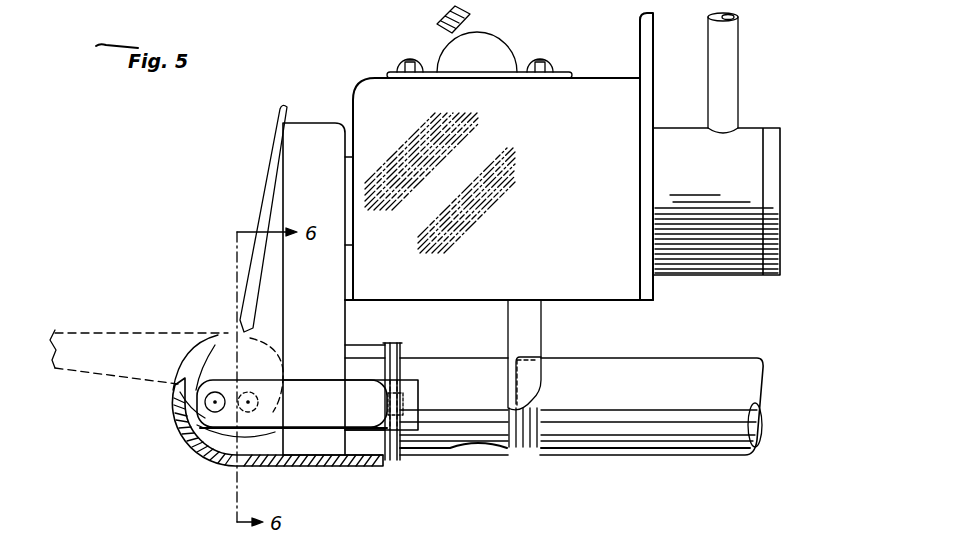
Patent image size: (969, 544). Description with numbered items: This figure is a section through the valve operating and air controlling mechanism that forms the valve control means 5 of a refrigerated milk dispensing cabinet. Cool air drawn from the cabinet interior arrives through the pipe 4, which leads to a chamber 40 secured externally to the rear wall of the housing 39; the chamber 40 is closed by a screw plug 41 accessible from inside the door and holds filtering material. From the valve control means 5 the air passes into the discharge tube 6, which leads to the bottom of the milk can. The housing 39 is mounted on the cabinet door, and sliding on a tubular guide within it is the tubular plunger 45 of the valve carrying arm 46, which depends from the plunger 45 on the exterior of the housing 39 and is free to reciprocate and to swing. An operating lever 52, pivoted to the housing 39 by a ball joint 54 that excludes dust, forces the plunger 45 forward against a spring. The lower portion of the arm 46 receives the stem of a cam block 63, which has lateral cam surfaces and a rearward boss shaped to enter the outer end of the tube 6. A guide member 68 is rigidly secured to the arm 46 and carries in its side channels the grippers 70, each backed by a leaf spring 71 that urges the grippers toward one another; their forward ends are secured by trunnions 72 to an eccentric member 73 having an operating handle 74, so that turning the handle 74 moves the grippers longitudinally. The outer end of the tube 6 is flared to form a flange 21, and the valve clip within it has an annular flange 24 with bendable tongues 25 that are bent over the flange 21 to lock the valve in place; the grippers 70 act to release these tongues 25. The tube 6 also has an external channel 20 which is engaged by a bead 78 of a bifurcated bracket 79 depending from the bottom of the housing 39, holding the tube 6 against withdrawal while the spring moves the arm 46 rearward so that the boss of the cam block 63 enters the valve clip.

The pipe 4 is at (722, 47).
The valve control means 5 is at (362, 78).
The discharge tube 6 is at (581, 406).
The external channel 20 is at (514, 448).
The flange 21 is at (398, 458).
The annular flange 24 is at (383, 456).
The bendable tongues 25 is at (405, 402).
The housing 39 is at (499, 156).
The chamber 40 is at (716, 201).
The screw plug 41 is at (773, 200).
The tubular plunger 45 is at (347, 222).
The valve carrying arm 46 is at (334, 289).
The operating lever 52 is at (471, 16).
The ball joint 54 is at (477, 52).
The cam block 63 is at (360, 457).
The guide member 68 is at (205, 447).
The grippers 70 is at (298, 378).
The leaf spring 71 is at (292, 404).
The trunnions 72 is at (228, 386).
The eccentric member 73 is at (218, 355).
The operating handle 74 is at (277, 186).
The bead 78 is at (522, 390).
The bifurcated bracket 79 is at (530, 334).